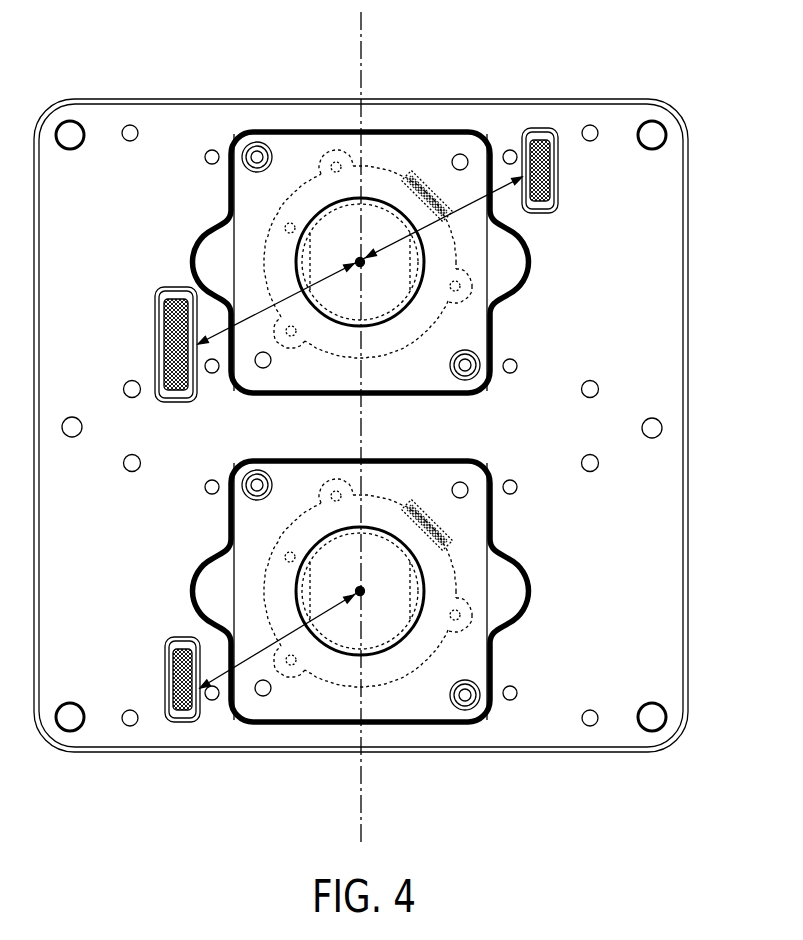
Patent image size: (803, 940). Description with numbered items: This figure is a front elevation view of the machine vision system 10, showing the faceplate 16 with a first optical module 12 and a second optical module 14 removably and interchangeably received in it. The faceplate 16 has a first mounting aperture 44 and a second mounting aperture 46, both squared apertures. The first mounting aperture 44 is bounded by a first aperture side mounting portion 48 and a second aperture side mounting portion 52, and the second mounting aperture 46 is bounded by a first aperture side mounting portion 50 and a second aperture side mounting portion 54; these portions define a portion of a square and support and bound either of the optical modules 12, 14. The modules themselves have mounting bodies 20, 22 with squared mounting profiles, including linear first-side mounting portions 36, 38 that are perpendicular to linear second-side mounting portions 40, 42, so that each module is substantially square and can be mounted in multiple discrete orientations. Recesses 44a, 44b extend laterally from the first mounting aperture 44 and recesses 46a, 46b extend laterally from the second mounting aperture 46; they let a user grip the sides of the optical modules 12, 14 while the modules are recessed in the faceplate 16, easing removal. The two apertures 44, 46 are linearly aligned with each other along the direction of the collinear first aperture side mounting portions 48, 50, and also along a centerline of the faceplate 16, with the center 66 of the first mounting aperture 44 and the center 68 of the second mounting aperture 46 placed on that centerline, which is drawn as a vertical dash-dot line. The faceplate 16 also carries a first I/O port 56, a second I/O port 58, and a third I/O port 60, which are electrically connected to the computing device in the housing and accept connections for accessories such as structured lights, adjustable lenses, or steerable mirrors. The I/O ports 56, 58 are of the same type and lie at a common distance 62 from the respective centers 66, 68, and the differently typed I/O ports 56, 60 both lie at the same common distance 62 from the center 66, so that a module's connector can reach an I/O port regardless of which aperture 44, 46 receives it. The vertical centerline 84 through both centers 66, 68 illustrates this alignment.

The machine vision system 10 is at (188, 46).
The first optical module 12 is at (368, 200).
The second optical module 14 is at (404, 583).
The faceplate 16 is at (652, 237).
The mounting body 20 is at (348, 286).
The mounting body 22 is at (361, 557).
The first-side mounting portion 36 is at (533, 262).
The first-side mounting portion 38 is at (535, 591).
The second-side mounting portion 40 is at (360, 119).
The second-side mounting portion 42 is at (360, 467).
The first mounting aperture 44 is at (360, 178).
The recess 44a is at (547, 262).
The recess 44b is at (173, 262).
The second mounting aperture 46 is at (355, 543).
The recess 46a is at (544, 591).
The recess 46b is at (171, 591).
The first aperture side mounting portion 48 is at (390, 353).
The first aperture side mounting portion 50 is at (395, 682).
The second aperture side mounting portion 52 is at (281, 222).
The second aperture side mounting portion 54 is at (321, 558).
The first I/O port 56 is at (559, 180).
The second I/O port 58 is at (167, 677).
The third I/O port 60 is at (156, 340).
The common distance 62 is at (270, 307).
The center 66 is at (303, 220).
The center 68 is at (303, 552).
The center line 84 is at (364, 42).